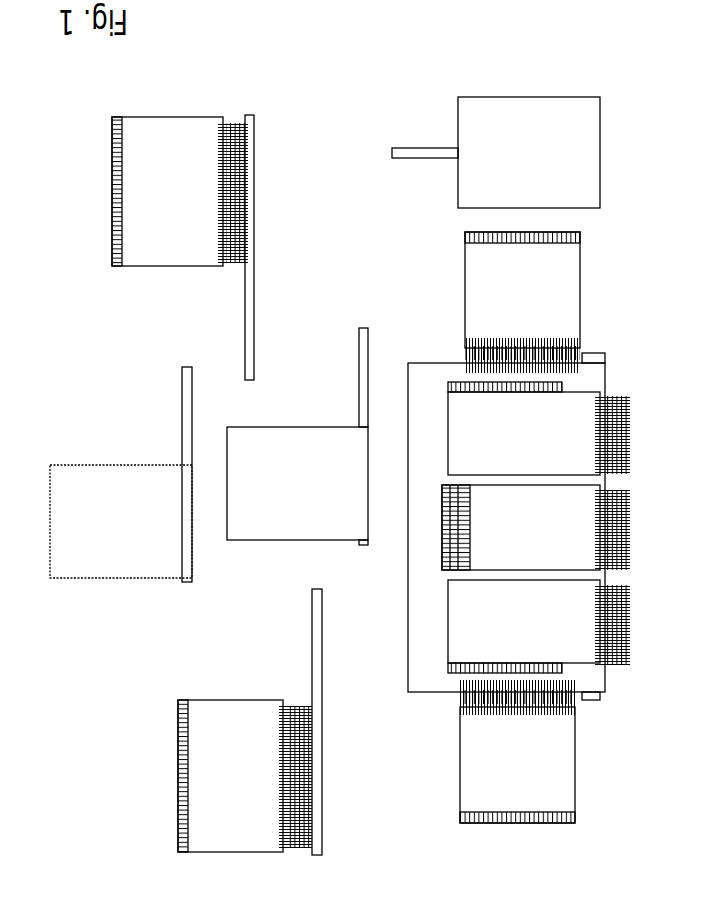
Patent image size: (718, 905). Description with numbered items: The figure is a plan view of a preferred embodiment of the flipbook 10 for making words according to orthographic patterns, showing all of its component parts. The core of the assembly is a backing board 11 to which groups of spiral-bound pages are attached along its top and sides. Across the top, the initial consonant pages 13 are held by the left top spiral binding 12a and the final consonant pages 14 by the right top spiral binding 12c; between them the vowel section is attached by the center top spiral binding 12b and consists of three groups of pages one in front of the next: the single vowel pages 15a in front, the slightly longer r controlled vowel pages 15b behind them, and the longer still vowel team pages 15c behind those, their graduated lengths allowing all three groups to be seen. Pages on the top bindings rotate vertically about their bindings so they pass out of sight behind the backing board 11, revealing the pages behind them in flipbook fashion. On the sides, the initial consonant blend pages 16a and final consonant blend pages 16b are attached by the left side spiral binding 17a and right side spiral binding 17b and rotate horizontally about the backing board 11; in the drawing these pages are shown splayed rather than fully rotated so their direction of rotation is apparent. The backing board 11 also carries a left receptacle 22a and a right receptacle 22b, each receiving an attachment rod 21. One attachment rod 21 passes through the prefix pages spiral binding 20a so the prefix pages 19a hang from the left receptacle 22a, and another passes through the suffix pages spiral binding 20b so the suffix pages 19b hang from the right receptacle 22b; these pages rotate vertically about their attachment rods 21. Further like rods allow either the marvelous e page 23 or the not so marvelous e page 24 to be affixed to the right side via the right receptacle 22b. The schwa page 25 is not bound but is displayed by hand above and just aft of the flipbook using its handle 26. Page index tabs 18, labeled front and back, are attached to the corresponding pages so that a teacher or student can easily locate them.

The flipbook 10 is at (609, 366).
The backing board 11 is at (412, 365).
The left top spiral binding 12a is at (630, 407).
The center top spiral binding 12b is at (630, 502).
The right top spiral binding 12c is at (630, 599).
The initial consonant pages 13 is at (448, 432).
The final consonant pages 14 is at (448, 630).
The single vowel pages 15a is at (442, 495).
The r controlled vowel pages 15b is at (448, 560).
The vowel team pages 15c is at (442, 527).
The initial consonant blend pages 16a is at (470, 272).
The final consonant blend pages 16b is at (462, 795).
The left side spiral binding 17a is at (562, 340).
The right side spiral binding 17b is at (555, 718).
The page index tabs 18 is at (112, 190).
The prefix pages 19a is at (215, 268).
The suffix pages 19b is at (268, 712).
The prefix pages spiral binding 20a is at (248, 270).
The suffix pages spiral binding 20b is at (308, 703).
The attachment rod 21 is at (252, 380).
The left receptacle for attachment rod 22a is at (596, 355).
The right receptacle for attachment rod 22b is at (600, 700).
The marvelous e page 23 is at (165, 578).
The not so marvelous e page 24 is at (242, 540).
The schwa page 25 is at (474, 97).
The handle for schwa page 26 is at (425, 148).